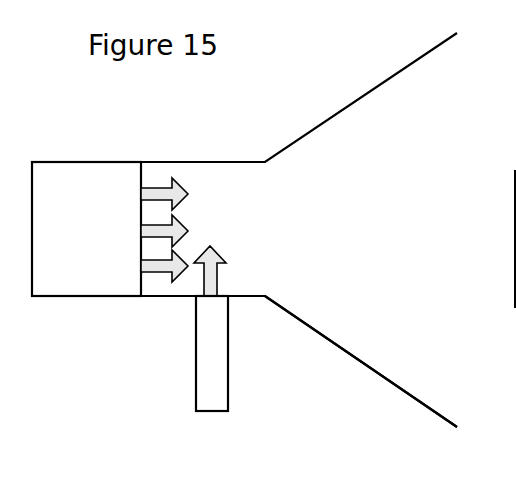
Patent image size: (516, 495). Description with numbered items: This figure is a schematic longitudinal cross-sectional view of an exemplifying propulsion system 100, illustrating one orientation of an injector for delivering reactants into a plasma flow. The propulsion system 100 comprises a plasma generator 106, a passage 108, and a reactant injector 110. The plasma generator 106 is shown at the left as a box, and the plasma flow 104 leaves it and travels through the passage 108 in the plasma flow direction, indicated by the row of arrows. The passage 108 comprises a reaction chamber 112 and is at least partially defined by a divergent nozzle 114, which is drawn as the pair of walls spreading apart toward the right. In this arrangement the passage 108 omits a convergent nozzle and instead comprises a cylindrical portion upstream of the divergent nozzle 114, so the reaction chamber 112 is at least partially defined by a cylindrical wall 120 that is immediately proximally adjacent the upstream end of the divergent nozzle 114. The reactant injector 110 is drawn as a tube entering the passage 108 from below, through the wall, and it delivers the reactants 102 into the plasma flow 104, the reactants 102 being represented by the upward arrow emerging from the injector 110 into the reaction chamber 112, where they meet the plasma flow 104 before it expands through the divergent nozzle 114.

The propulsion system 100 is at (278, 126).
The reactants 102 is at (218, 278).
The plasma flow 104 is at (156, 290).
The plasma generator 106 is at (86, 229).
The passage 108 is at (233, 181).
The reactant injector 110 is at (228, 358).
The reaction chamber 112 is at (211, 232).
The divergent nozzle 114 is at (377, 378).
The cylindrical wall 120 is at (166, 161).